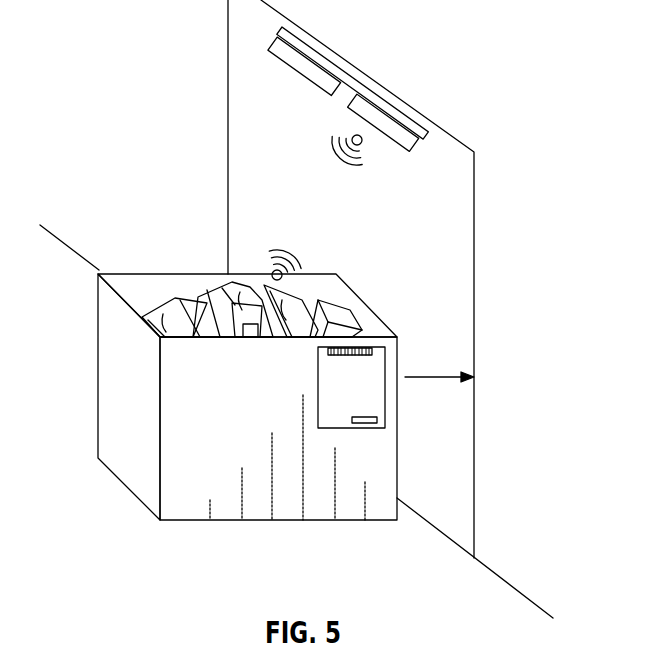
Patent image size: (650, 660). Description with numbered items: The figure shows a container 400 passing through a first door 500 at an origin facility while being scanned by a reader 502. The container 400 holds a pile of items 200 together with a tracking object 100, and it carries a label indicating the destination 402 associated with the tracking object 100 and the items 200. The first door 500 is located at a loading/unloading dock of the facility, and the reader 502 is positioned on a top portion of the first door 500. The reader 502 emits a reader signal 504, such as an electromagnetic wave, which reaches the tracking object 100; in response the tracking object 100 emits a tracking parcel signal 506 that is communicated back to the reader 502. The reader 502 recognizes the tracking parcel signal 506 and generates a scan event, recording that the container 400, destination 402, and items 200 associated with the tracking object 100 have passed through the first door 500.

The tracking object 100 is at (238, 335).
The items 200 is at (189, 306).
The container 400 is at (373, 462).
The destination 402 is at (373, 395).
The first door 500 is at (474, 333).
The reader 502 is at (380, 123).
The reader signal 504 is at (350, 170).
The tracking parcel signal 506 is at (282, 246).